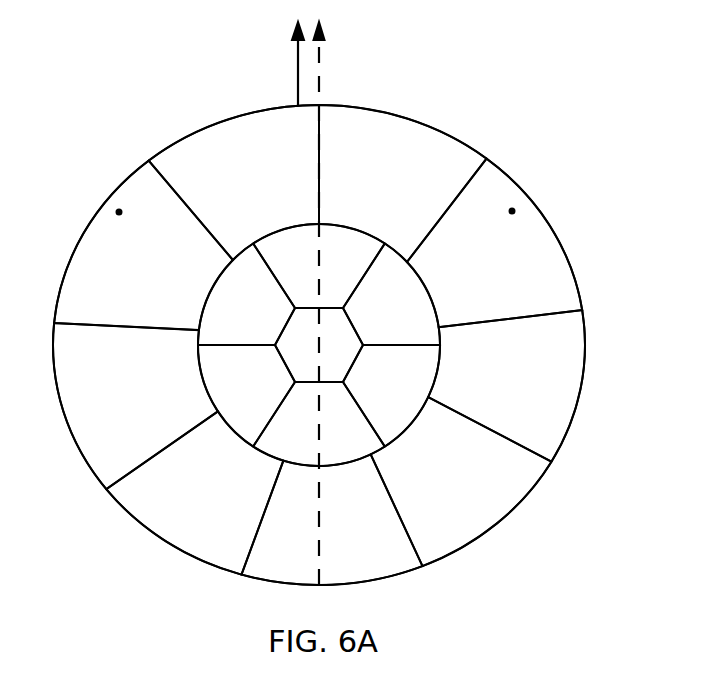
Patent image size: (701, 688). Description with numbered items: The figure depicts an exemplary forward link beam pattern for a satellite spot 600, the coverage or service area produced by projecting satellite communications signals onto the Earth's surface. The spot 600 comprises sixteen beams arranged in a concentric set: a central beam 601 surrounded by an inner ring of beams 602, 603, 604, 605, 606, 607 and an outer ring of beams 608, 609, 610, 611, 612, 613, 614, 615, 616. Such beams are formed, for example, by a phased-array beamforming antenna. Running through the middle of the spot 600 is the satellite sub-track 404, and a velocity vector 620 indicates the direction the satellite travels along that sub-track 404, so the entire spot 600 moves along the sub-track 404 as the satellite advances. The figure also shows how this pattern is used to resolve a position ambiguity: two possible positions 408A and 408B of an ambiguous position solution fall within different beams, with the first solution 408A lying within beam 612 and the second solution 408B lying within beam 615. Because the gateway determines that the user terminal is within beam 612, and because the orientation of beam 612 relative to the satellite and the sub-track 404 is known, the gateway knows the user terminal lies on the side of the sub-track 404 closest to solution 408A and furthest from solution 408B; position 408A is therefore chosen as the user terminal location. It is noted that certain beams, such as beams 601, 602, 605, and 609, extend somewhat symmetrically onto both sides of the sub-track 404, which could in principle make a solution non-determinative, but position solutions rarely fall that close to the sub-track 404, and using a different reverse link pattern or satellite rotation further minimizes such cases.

The spot 600 is at (576, 68).
The sub-track 404 is at (298, 87).
The velocity vector 620 is at (318, 88).
The possible position 408A is at (119, 212).
The possible position 408B is at (512, 211).
The beam 601 is at (319, 345).
The beam 602 is at (319, 424).
The beam 603 is at (246, 396).
The beam 604 is at (246, 295).
The beam 605 is at (319, 266).
The beam 606 is at (391, 295).
The beam 607 is at (391, 396).
The beam 608 is at (461, 481).
The beam 609 is at (332, 519).
The beam 610 is at (194, 492).
The beam 611 is at (135, 406).
The beam 612 is at (143, 246).
The beam 613 is at (234, 182).
The beam 614 is at (403, 183).
The beam 615 is at (494, 243).
The beam 616 is at (506, 386).